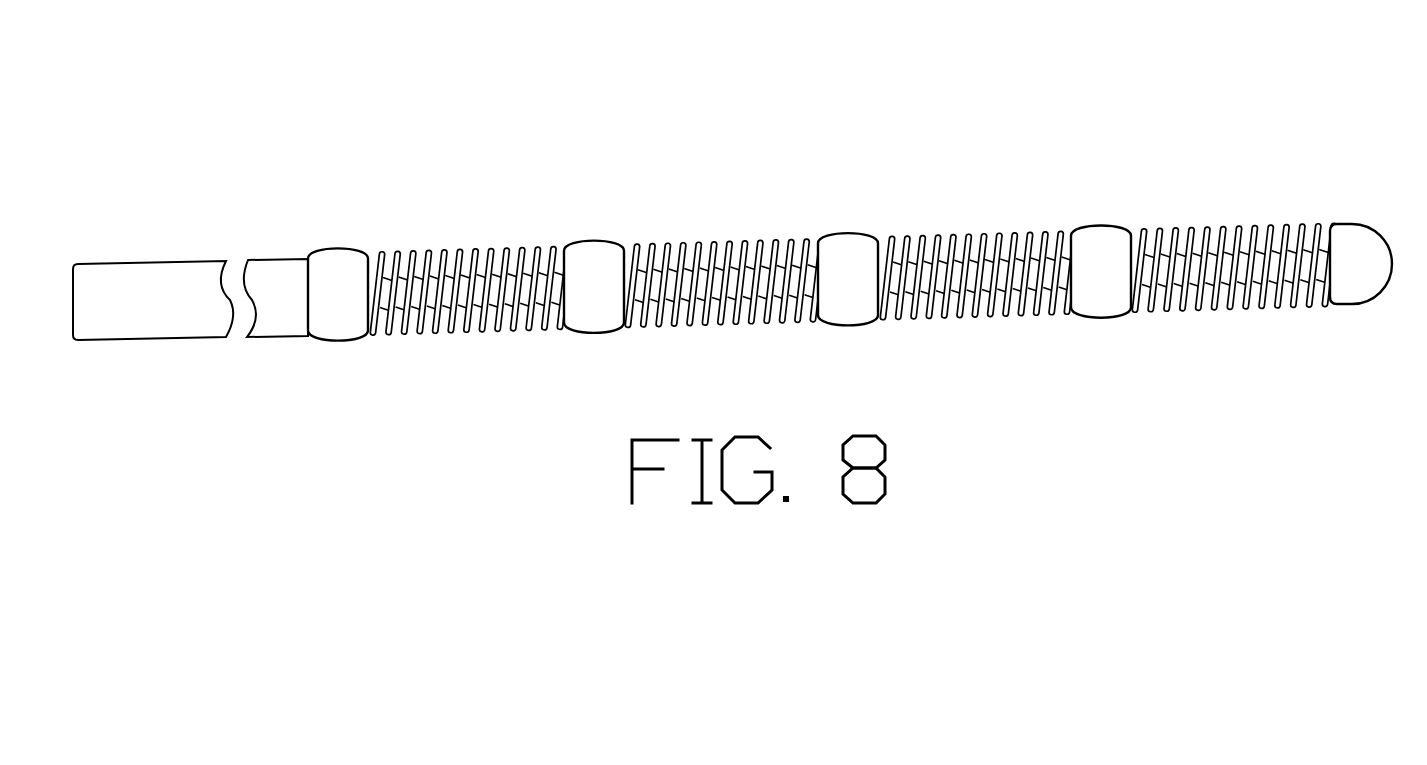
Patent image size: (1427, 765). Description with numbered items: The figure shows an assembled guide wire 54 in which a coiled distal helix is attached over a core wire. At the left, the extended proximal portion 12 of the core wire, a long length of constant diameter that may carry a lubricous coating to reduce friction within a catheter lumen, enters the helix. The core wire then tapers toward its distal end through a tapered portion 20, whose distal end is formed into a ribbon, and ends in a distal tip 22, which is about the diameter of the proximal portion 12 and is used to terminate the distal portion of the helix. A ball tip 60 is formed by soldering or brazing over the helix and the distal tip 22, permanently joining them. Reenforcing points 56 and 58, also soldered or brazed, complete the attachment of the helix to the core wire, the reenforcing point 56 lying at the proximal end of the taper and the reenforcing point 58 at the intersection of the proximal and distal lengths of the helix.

The extended proximal portion 12 is at (190, 266).
The tapered portion 20 is at (819, 259).
The distal tip 22 is at (1303, 246).
The assembled guide wire 54 is at (749, 183).
The reenforcing point 56 is at (357, 260).
The reenforcing point 58 is at (1084, 249).
The ball tip 60 is at (1377, 248).